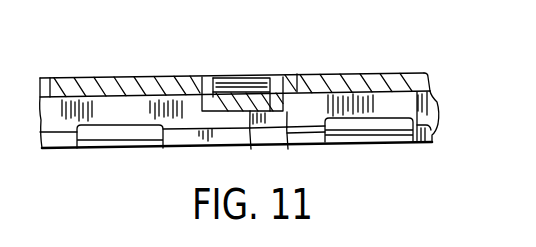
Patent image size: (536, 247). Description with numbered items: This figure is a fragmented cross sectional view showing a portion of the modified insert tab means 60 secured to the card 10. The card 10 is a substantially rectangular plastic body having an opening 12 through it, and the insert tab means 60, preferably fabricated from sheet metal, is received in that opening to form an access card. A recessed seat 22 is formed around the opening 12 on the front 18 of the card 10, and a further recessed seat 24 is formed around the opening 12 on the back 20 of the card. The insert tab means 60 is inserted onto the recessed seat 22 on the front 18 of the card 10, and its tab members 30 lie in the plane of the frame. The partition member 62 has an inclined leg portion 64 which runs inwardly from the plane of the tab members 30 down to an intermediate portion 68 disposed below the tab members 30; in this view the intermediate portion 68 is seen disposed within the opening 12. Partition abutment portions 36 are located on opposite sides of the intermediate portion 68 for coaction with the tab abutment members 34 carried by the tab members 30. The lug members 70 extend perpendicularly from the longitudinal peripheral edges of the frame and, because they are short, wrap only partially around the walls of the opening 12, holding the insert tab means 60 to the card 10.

The card 10 is at (233, 150).
The opening 12 is at (439, 107).
The front 18 is at (280, 80).
The back 20 is at (176, 146).
The recessed seat 22 is at (430, 81).
The recessed seat 24 is at (435, 133).
The tab members 30 is at (123, 65).
The tab abutment members 34 is at (43, 78).
The partition abutment portions 36 is at (208, 99).
The insert tab means 60 is at (373, 61).
The partition members 62 is at (258, 71).
The leg portion 64 is at (232, 83).
The intermediate portion 68 is at (249, 148).
The lug members 70 is at (107, 141).